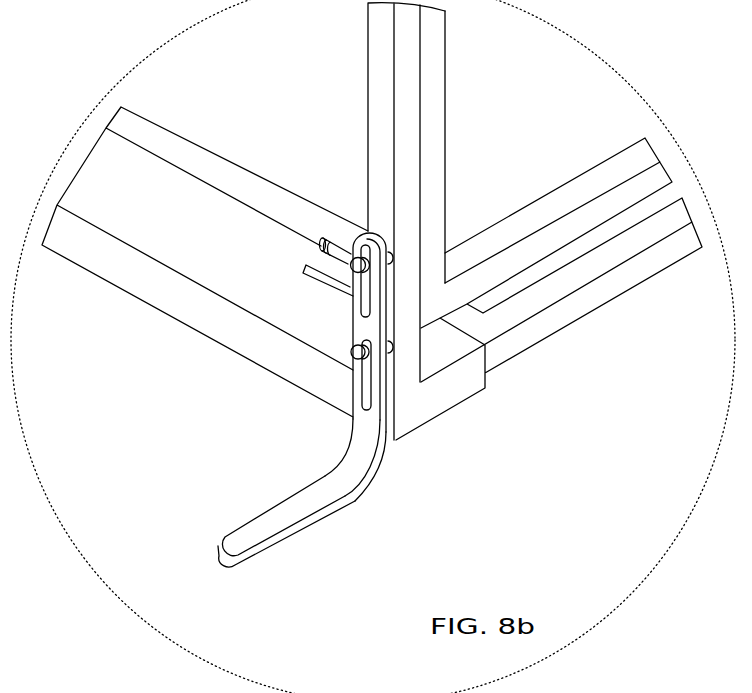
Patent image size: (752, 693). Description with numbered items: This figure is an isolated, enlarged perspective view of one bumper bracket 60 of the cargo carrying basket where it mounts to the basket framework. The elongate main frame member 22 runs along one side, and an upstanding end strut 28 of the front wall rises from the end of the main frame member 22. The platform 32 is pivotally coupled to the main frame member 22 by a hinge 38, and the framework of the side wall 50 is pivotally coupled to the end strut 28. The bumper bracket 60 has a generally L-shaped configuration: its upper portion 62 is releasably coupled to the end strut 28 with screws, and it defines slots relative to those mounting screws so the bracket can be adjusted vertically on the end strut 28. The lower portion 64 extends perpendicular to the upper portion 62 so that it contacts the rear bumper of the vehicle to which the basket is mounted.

The main frame member 22 is at (160, 219).
The end strut 28 is at (366, 51).
The side wall 50 is at (466, 123).
The platform 32 is at (627, 328).
The hinge 38 is at (318, 263).
The upper portion 62 is at (351, 327).
The bumper bracket 60 is at (395, 481).
The lower portion 64 is at (242, 529).